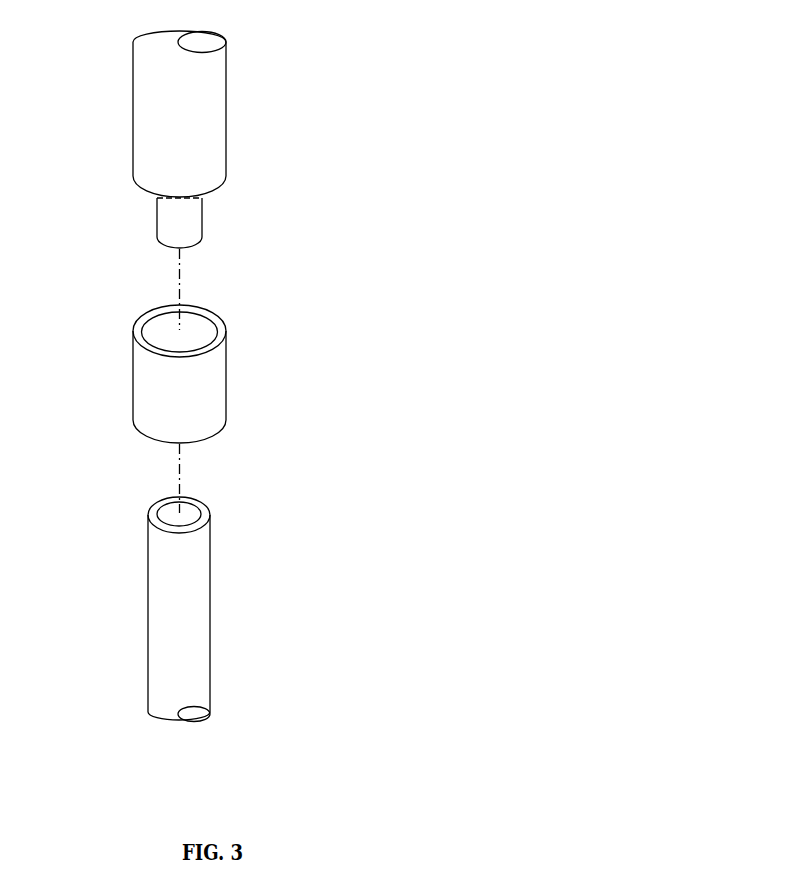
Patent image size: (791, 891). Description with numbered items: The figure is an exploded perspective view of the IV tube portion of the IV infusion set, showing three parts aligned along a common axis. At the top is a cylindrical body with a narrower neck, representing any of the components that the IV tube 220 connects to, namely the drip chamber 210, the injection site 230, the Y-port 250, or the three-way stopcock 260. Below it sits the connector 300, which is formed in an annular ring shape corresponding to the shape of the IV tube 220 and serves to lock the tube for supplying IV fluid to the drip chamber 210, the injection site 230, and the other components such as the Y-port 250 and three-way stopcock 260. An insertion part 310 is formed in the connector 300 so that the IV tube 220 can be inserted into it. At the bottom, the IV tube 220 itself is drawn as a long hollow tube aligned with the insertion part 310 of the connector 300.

The drip chamber 210 is at (280, 139).
The injection site 230 is at (280, 139).
The Y-port 250 is at (280, 139).
The three-way stopcock 260 is at (226, 107).
The connector 300 is at (174, 374).
The insertion part 310 is at (150, 325).
The IV tube 220 is at (210, 615).